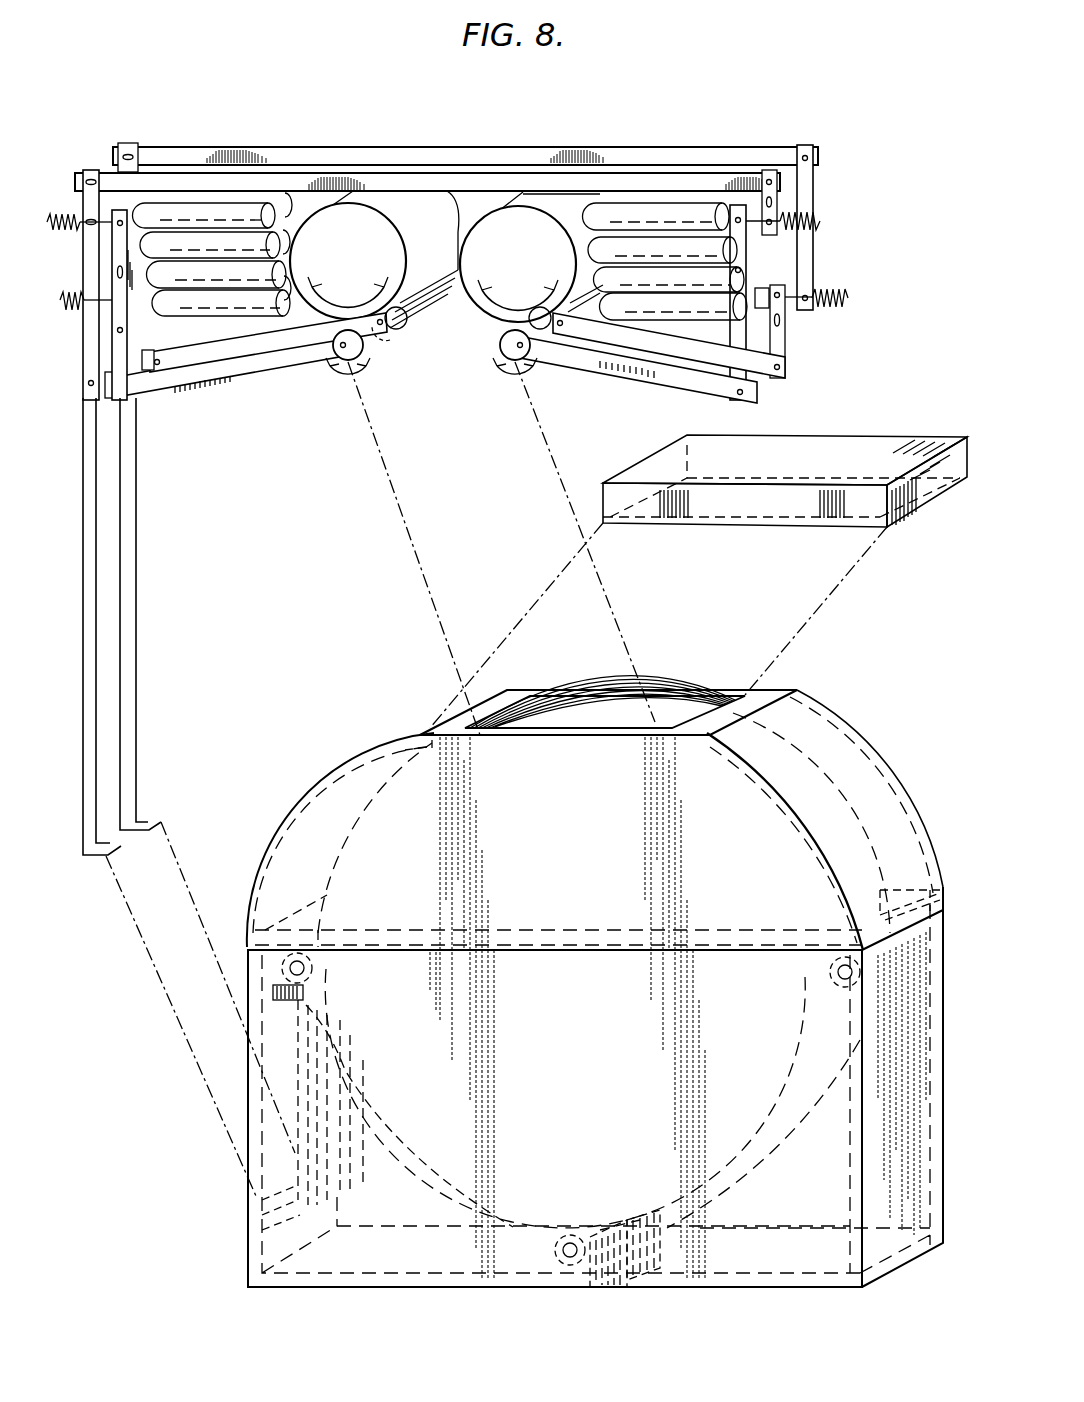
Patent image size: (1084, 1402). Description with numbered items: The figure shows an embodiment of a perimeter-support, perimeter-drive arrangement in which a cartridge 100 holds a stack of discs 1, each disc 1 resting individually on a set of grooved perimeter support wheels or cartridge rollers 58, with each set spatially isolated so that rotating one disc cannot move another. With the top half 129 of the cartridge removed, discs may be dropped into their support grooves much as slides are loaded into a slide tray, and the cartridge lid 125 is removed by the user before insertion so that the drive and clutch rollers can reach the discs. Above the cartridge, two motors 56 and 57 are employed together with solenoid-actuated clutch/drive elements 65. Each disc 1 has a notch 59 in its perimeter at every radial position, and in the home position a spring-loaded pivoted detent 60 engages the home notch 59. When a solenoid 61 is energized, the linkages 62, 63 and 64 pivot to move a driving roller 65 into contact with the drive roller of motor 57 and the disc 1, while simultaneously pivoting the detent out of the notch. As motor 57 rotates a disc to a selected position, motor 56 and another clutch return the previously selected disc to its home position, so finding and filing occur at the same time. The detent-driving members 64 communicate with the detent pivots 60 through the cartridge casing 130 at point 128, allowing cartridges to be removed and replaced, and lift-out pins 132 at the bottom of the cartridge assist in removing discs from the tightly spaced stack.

The disc 1 is at (687, 682).
The motor 56 is at (532, 275).
The motor 57 is at (361, 275).
The perimeter support wheels or bearings 58 is at (308, 968).
The notch 59 is at (318, 1005).
The spring-loaded pivoted detent 60 is at (340, 1058).
The solenoid 61 is at (190, 215).
The linkage 62 is at (112, 344).
The linkage 63 is at (228, 373).
The linkage (detent-driving member) 64 is at (94, 497).
The driving roller (clutch/drive element) 65 is at (362, 343).
The cartridge 100 is at (808, 1205).
The cartridge lid 125 is at (862, 432).
The point 128 is at (106, 858).
The top half of the cartridge 129 is at (868, 770).
The cartridge casing 130 is at (918, 1057).
The lift-out pins 132 is at (604, 1292).